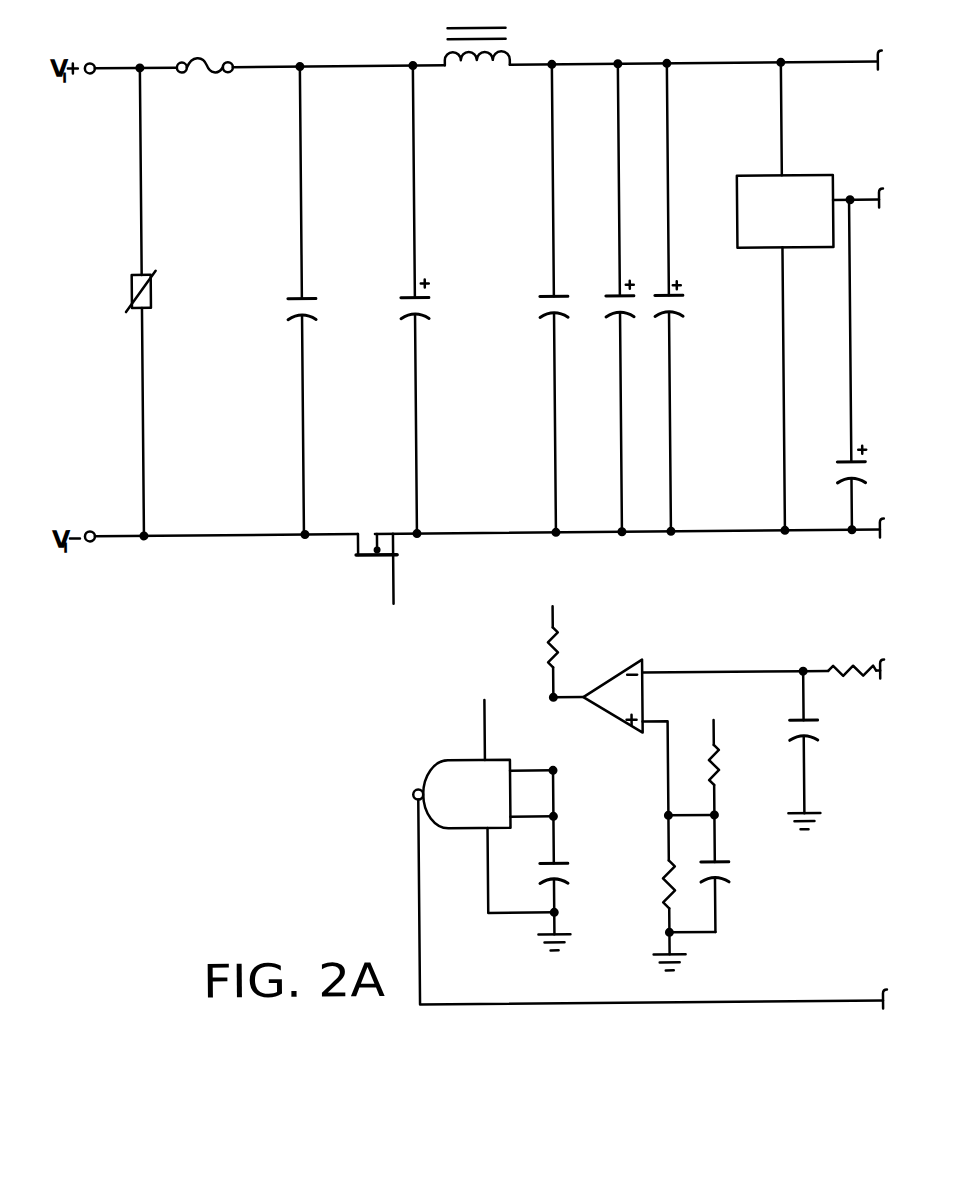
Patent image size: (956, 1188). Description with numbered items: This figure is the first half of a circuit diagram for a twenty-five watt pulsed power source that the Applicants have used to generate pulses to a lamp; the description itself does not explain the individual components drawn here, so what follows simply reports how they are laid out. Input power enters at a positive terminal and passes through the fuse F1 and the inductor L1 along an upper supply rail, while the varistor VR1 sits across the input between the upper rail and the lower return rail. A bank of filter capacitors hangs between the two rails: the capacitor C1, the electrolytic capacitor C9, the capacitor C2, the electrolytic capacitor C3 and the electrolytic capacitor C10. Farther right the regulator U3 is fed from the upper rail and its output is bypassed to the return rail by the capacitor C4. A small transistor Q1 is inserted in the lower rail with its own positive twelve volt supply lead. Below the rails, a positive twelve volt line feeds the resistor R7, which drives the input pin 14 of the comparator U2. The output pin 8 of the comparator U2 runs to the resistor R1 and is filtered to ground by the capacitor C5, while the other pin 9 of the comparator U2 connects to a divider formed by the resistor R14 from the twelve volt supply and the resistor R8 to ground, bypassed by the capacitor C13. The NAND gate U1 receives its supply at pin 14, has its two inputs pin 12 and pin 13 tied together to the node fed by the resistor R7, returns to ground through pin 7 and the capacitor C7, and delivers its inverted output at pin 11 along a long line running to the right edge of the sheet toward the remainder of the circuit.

The fuse F1 (MCD-5) F1 is at (209, 97).
The inductor L1 (150502) L1 is at (514, 32).
The varistor VR1 is at (162, 301).
The capacitor C1 (.1 uF 50V) C1 is at (321, 300).
The electrolytic capacitor C9 (220 uF 25V) C9 is at (436, 299).
The capacitor C2 (.1 uF 50V) C2 is at (572, 298).
The electrolytic capacitor C3 (220 uF 25V) C3 is at (633, 297).
The electrolytic capacitor C10 (220 uF 25V) C10 is at (689, 297).
The voltage regulator U3 (LM2840) U3 is at (811, 295).
The electrolytic capacitor C4 (10 uF 6.3V) C4 is at (833, 362).
The transistor Q1 (MPZ48) Q1 is at (409, 585).
The resistor R7 (100K) R7 is at (538, 636).
The comparator U2 (part of LM330) U2 is at (597, 666).
The NAND gate U1 (part of CD4011) U1 is at (446, 760).
The resistor R1 (10K) R1 is at (841, 646).
The capacitor C5 (.1 uF 50V) C5 is at (821, 750).
The resistor R14 (10K) R14 is at (713, 754).
The resistor R8 (120) R8 is at (656, 892).
The capacitor C13 (.1 uF 50V) C13 is at (717, 874).
The capacitor C7 (.1 uF 50V) C7 is at (572, 860).
The pin 14 (supply pin of U1 / input pin 14 of U2) 14 is at (522, 713).
The pin 12 input of NAND gate U1 12 is at (534, 759).
The pin 13 input of NAND gate U1 13 is at (534, 806).
The pin 7 ground pin of U1 7 is at (513, 870).
The pin 11 output of NAND gate U1 11 is at (646, 886).
The pin 8 of comparator U2 8 is at (722, 662).
The pin 9 of comparator U2 9 is at (655, 756).